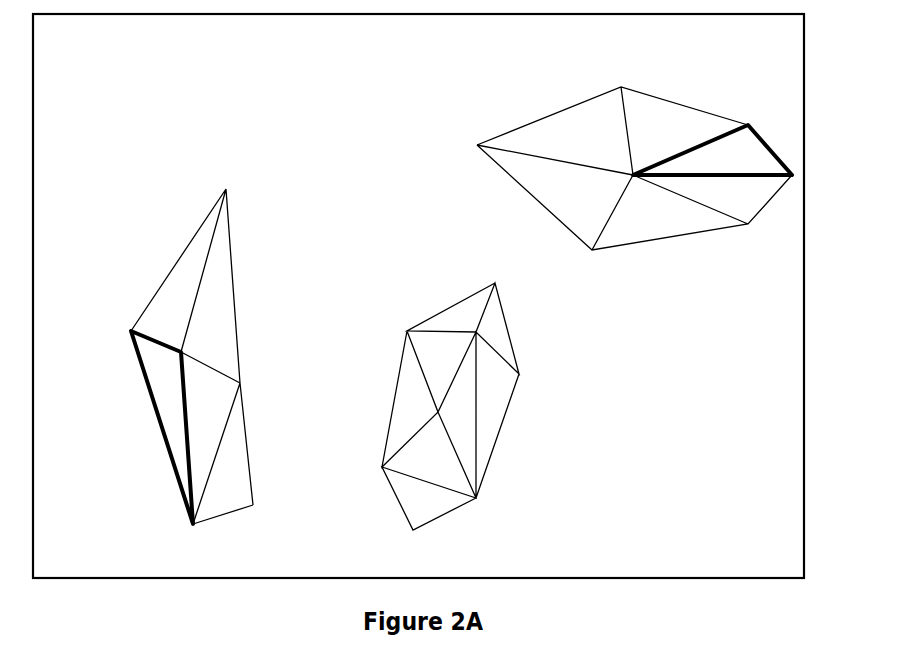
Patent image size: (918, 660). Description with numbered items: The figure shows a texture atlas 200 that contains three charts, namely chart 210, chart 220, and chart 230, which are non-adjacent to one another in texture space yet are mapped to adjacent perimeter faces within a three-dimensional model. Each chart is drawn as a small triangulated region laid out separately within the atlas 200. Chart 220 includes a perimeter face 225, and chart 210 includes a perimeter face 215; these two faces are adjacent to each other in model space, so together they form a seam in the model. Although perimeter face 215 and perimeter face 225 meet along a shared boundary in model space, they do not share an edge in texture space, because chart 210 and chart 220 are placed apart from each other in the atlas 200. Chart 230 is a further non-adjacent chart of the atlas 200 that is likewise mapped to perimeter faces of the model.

The texture atlas 200 is at (118, 99).
The chart 210 is at (233, 261).
The perimeter face 215 is at (162, 393).
The chart 220 is at (558, 113).
The perimeter face 225 is at (758, 157).
The chart 230 is at (498, 434).